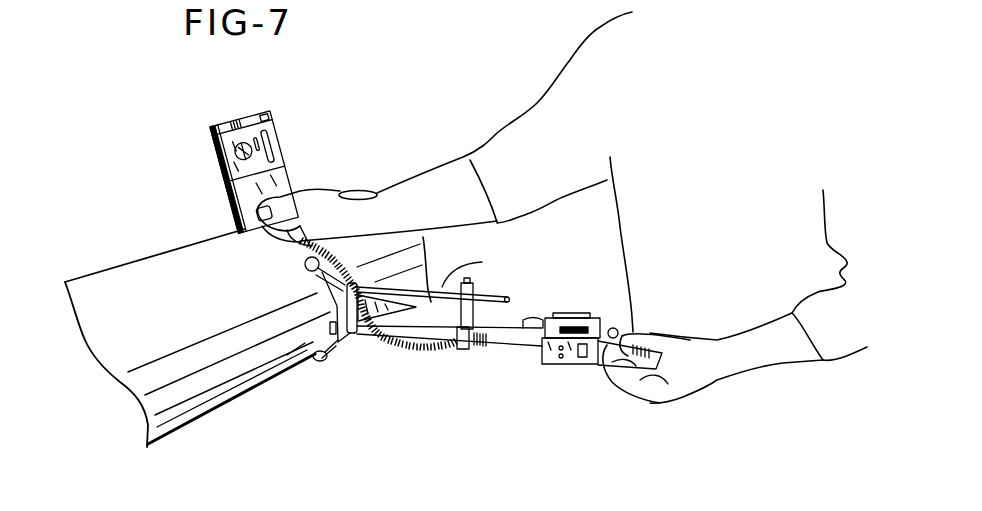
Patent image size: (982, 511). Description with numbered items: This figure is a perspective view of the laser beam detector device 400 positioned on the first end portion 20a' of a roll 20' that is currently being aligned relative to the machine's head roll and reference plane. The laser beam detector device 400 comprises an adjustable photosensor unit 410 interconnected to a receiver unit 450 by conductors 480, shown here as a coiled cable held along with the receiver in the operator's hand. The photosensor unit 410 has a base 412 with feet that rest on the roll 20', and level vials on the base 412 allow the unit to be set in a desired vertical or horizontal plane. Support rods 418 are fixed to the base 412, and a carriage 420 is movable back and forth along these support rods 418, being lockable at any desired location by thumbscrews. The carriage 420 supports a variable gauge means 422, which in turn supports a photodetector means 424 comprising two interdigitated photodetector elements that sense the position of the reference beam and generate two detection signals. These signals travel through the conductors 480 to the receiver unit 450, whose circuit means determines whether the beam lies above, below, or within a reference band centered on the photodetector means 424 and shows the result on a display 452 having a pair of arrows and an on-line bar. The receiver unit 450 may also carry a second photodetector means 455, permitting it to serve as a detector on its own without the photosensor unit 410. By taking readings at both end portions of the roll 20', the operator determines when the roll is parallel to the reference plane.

The roll 20' is at (273, 318).
The first end portion of roll 20a' is at (190, 316).
The laser beam detector device 400 is at (481, 370).
The adjustable photosensor unit 410 is at (518, 372).
The base 412 is at (337, 360).
The support rods 418 is at (432, 287).
The carriage 420 is at (475, 350).
The variable gauge means 422 is at (575, 362).
The photodetector means 424 is at (543, 313).
The receiver unit 450 is at (263, 152).
The display 452 is at (241, 124).
The second photodetector means 455 is at (247, 117).
The conductors 480 is at (408, 350).